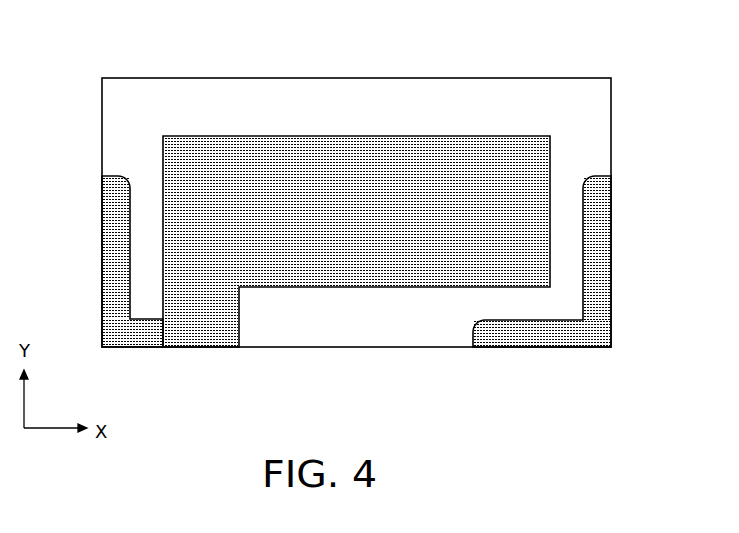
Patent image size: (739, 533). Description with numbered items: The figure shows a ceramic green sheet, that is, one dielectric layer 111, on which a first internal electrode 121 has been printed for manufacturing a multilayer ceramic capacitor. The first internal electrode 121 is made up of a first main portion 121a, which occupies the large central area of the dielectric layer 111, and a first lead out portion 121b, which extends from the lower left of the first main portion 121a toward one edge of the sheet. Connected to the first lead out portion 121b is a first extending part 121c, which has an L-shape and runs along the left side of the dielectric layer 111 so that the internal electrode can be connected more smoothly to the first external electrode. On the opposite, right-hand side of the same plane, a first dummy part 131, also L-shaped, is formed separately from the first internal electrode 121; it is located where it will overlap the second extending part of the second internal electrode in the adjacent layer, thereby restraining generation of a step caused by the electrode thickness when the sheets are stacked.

The dielectric layer 111 is at (525, 78).
The first internal electrode 121 is at (315, 213).
The first main portion 121a is at (320, 243).
The first lead out portion 121b is at (203, 305).
The first extending part 121c is at (113, 341).
The first dummy part 131 is at (550, 337).